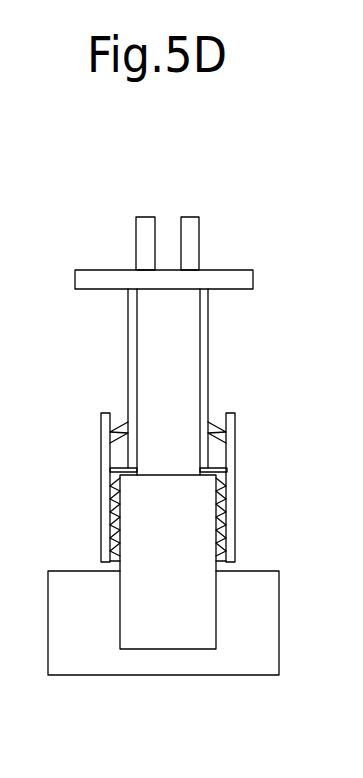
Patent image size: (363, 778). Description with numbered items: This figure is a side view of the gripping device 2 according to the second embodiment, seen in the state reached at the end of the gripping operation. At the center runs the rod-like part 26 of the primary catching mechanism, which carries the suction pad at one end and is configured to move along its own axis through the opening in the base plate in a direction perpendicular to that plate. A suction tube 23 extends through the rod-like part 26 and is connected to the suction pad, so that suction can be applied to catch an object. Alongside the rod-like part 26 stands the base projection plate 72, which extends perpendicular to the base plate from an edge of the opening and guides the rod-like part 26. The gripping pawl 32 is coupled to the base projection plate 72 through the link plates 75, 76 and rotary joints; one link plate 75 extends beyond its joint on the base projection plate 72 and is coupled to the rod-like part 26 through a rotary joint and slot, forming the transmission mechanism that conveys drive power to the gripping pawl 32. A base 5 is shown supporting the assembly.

The gripping device 2 is at (88, 393).
The suction tube 23 is at (145, 227).
The rod-like part 26 is at (185, 337).
The base projection plate 72 is at (203, 375).
The link plate 75 is at (101, 447).
The link plate 76 is at (105, 528).
The gripping pawl 32 is at (208, 602).
The base 5 is at (92, 653).